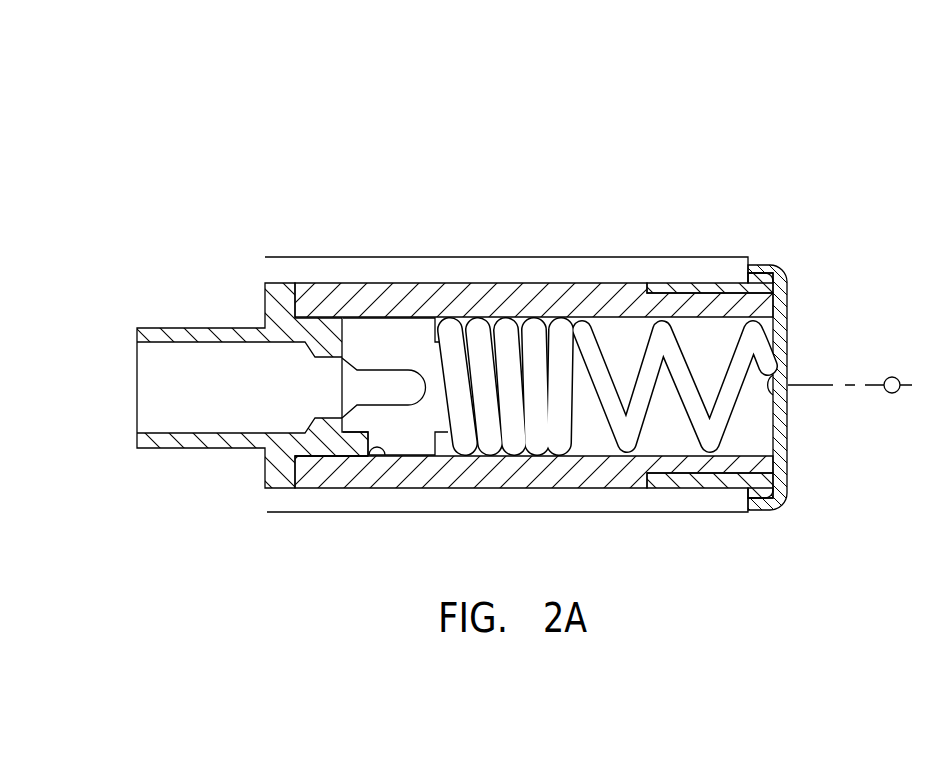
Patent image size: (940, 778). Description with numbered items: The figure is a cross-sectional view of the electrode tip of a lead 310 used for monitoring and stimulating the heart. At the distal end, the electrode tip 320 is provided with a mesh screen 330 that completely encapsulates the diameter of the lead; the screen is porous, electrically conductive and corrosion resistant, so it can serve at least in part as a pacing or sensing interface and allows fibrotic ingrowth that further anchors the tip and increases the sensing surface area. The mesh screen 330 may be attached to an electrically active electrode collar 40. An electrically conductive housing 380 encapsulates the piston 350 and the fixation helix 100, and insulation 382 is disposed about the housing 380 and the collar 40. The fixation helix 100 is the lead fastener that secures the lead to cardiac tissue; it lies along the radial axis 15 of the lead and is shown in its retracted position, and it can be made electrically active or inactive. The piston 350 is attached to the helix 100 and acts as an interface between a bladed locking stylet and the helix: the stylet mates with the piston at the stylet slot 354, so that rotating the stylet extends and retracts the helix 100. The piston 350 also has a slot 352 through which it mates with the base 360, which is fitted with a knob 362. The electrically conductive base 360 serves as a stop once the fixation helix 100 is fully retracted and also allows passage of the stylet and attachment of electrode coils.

The lead 310 is at (531, 341).
The housing 380 is at (396, 290).
The insulation 382 is at (535, 272).
The electrode tip 320 is at (733, 258).
The electrode collar 40 is at (757, 270).
The mesh screen 330 is at (787, 317).
The radial axis 15 is at (887, 398).
The base 360 is at (268, 312).
The knob 362 is at (352, 447).
The stylet slot 354 is at (402, 368).
The piston 350 is at (405, 440).
The slot 352 is at (383, 458).
The fixation helix 100 is at (528, 447).